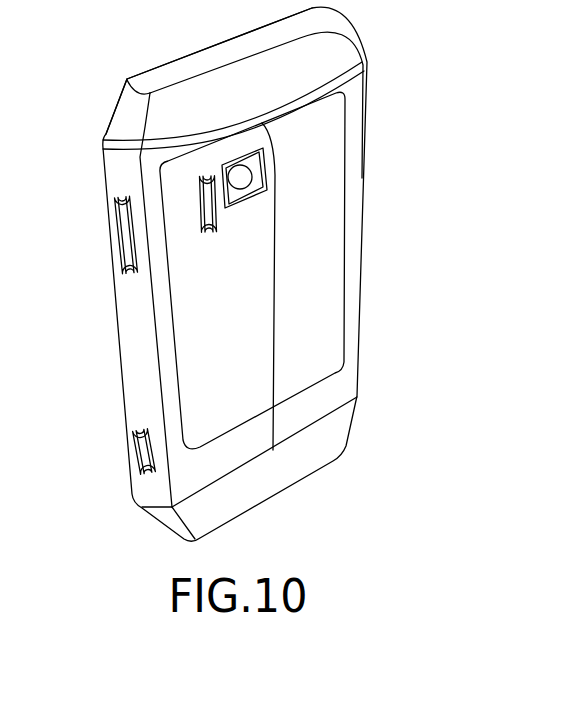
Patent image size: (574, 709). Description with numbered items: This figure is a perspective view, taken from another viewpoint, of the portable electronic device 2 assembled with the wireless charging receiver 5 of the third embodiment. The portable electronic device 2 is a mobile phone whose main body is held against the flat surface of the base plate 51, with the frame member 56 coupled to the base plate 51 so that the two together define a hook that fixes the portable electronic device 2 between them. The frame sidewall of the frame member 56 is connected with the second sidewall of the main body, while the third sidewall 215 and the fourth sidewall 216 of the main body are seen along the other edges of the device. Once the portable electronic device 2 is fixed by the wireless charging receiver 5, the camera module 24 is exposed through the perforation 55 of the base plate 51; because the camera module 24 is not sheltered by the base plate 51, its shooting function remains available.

The portable electronic device 2 is at (130, 127).
The wireless charging receiver 5 is at (355, 325).
The camera module 24 is at (237, 166).
The base plate 51 is at (325, 177).
The perforation 55 is at (199, 173).
The frame member 56 is at (137, 348).
The third sidewall 215 is at (337, 55).
The fourth sidewall 216 is at (305, 458).